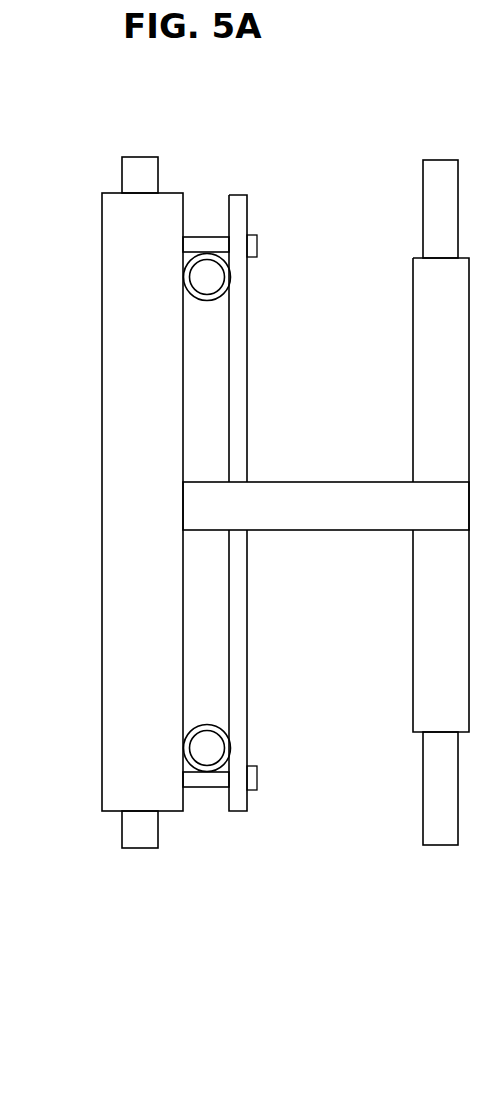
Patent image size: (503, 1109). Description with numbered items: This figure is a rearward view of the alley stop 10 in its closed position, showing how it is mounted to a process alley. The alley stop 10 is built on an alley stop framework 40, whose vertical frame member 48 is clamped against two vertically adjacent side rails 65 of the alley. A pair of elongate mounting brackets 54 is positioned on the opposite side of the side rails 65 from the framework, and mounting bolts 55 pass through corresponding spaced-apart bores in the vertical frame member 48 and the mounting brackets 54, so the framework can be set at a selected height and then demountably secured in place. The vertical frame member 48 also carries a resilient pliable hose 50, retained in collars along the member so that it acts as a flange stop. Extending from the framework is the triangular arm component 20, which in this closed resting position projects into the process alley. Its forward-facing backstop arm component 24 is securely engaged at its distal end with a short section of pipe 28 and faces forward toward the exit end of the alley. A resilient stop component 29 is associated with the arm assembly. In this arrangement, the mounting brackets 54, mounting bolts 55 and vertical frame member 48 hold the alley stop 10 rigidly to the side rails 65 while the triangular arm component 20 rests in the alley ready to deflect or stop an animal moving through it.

The alley stop 10 is at (300, 155).
The triangular arm component 20 is at (390, 458).
The backstop arm component 24 is at (275, 530).
The pipe 28 is at (413, 643).
The resilient stop component 29 is at (423, 757).
The alley stop framework 40 is at (269, 1002).
The vertical frame member 48 is at (103, 760).
The resilient pliable hose 50 is at (122, 830).
The mounting brackets 54 is at (247, 343).
The mounting bolts 55 is at (205, 237).
The side rails 65 is at (203, 275).